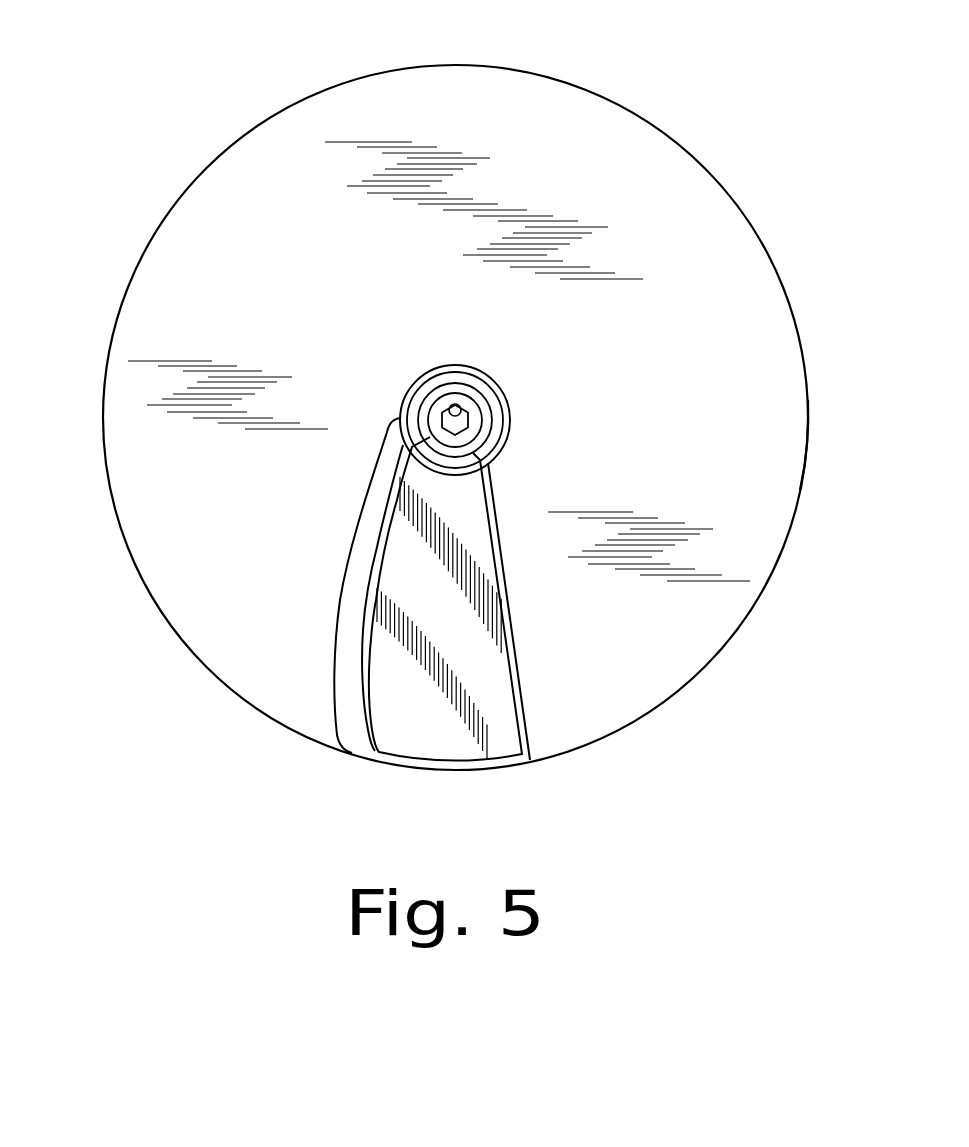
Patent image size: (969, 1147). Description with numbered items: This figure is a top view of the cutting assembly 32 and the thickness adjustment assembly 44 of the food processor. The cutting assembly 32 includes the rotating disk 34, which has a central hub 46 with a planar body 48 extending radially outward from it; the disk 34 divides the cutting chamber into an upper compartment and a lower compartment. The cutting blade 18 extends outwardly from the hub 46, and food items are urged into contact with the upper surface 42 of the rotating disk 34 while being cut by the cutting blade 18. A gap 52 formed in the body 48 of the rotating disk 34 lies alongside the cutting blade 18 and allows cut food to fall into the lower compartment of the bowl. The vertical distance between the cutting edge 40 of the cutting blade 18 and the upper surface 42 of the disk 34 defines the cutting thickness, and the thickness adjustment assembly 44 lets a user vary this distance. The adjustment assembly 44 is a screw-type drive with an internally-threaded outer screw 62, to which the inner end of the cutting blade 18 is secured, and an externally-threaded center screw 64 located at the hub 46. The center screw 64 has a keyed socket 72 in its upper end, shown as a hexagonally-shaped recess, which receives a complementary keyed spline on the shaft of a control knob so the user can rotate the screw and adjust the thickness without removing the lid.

The cutting assembly 32 is at (739, 123).
The rotating disk 34 is at (778, 484).
The planar body 48 is at (124, 346).
The thickness adjustment assembly 44 is at (503, 383).
The central hub 46 is at (420, 417).
The outer screw 62 is at (430, 405).
The center screw 64 is at (449, 396).
The keyed socket 72 is at (460, 403).
The cutting blade 18 is at (472, 537).
The cutting edge 40 is at (385, 515).
The gap 52 is at (360, 558).
The upper surface 42 is at (335, 715).